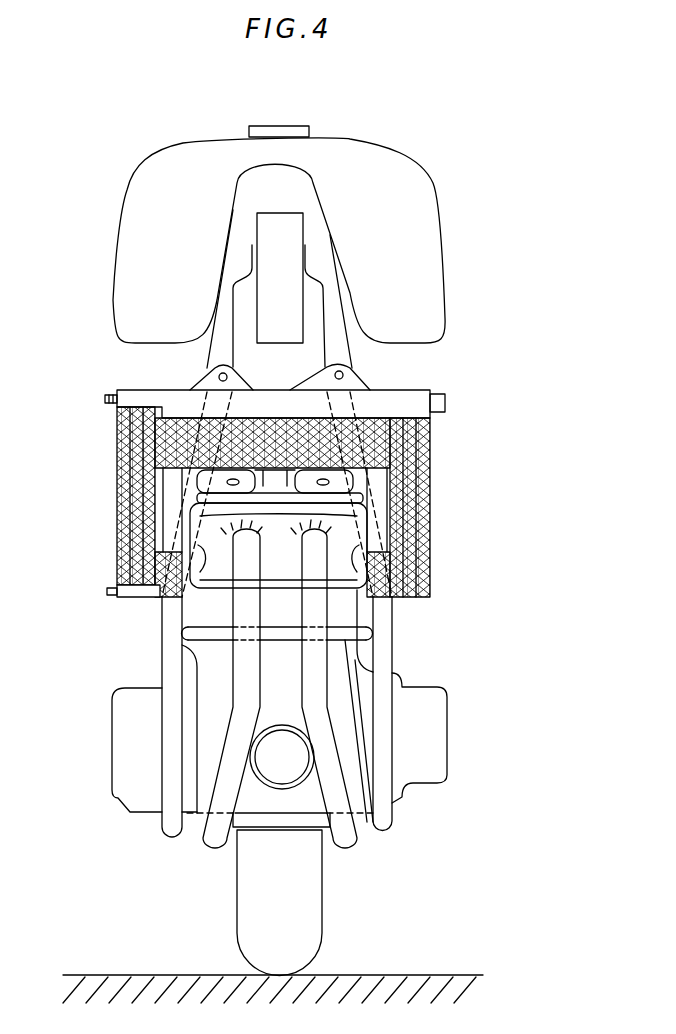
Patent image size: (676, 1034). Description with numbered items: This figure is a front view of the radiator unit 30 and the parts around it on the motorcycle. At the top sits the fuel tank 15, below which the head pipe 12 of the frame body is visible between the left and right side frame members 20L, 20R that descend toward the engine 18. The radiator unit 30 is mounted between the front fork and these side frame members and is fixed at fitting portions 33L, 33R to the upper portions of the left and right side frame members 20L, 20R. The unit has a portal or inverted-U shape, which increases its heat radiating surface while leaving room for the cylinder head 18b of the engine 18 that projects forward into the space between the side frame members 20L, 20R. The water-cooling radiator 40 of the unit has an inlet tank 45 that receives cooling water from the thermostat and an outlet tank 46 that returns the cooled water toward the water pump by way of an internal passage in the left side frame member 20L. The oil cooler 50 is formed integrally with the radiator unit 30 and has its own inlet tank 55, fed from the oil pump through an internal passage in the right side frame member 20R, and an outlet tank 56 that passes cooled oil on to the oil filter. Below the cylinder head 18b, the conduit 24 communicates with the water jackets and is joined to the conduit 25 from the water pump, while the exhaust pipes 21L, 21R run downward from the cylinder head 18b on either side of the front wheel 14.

The fuel tank 15 is at (420, 190).
The head pipe 12 is at (267, 230).
The right side frame member 20R is at (237, 317).
The left side frame member 20L is at (320, 302).
The radiator unit 30 is at (268, 336).
The fitting portion 33R is at (193, 385).
The fitting portion 33L is at (294, 381).
The inlet tank 45 is at (334, 409).
The outlet tank 46 is at (417, 402).
The inlet tank 55 is at (100, 398).
The oil cooler 50 is at (117, 478).
The water-cooling radiator 40 is at (430, 467).
The outlet tank 56 is at (127, 588).
The engine 18 is at (274, 648).
The cylinder head 18b is at (347, 513).
The conduit 24 is at (367, 632).
The conduit 25 is at (353, 698).
The exhaust pipe 21R is at (210, 838).
The exhaust pipe 21L is at (353, 835).
The front wheel 14 is at (307, 923).